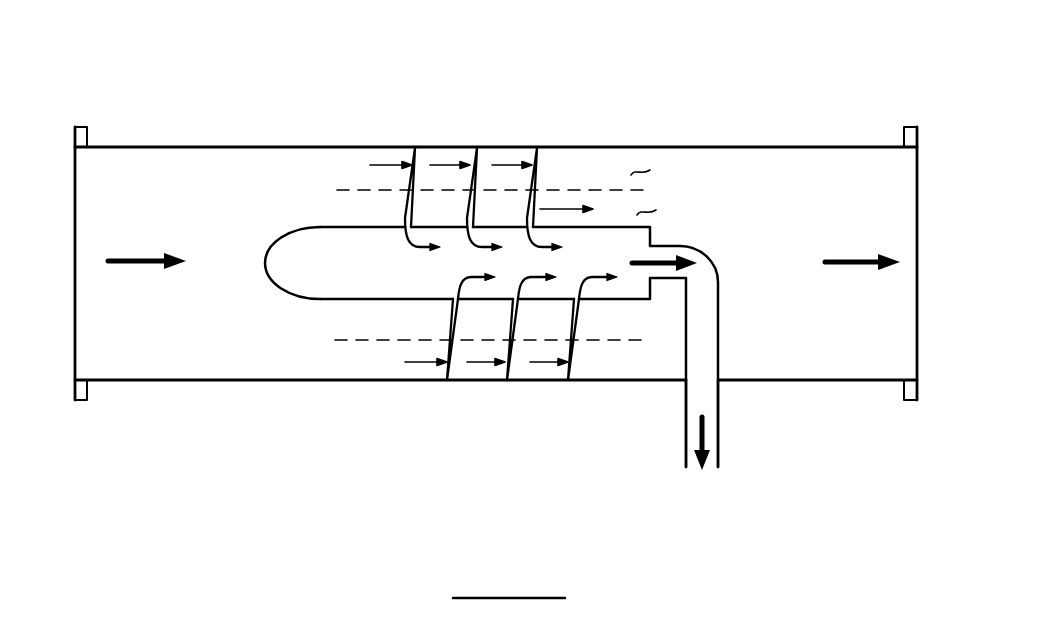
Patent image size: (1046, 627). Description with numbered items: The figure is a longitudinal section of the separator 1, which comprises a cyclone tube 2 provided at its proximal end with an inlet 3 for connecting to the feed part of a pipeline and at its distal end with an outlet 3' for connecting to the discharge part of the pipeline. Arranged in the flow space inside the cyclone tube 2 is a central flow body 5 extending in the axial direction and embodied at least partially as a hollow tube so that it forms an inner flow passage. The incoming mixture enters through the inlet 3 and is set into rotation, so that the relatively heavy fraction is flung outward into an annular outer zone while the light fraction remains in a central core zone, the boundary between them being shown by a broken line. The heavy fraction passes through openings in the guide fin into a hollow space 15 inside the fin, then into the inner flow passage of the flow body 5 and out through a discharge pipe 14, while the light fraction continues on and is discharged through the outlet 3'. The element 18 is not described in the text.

The separator 1 is at (160, 76).
The cyclone tube 2 is at (218, 380).
The inlet 3 is at (71, 235).
The outlet 3' is at (914, 230).
The central flow body 5 is at (366, 299).
The discharge pipe 14 is at (720, 439).
The hollow space 15 is at (411, 206).
The interior chamber of body 18 is at (410, 284).